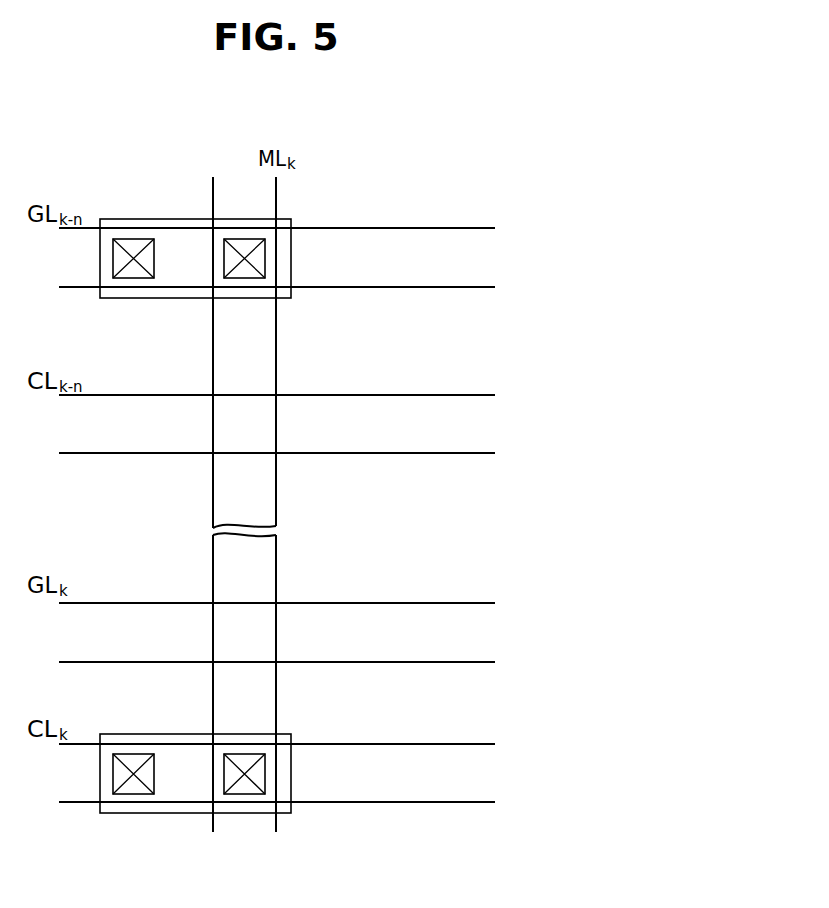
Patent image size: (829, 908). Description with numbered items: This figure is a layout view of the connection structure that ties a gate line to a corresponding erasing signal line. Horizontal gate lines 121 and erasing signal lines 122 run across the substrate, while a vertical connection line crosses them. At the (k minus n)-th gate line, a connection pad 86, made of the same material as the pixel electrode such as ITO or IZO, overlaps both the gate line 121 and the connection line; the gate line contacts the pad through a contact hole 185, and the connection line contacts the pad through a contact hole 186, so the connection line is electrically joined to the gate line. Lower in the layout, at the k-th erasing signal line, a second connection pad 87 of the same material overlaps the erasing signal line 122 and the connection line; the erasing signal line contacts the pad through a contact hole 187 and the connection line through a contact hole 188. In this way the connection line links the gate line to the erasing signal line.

The connection pad 86 is at (162, 219).
The connection pad 87 is at (162, 734).
The gate line 121 is at (428, 228).
The erasing signal line 122 is at (428, 395).
The contact hole 185 is at (130, 278).
The contact hole 186 is at (250, 278).
The contact hole 187 is at (130, 794).
The contact hole 188 is at (250, 794).